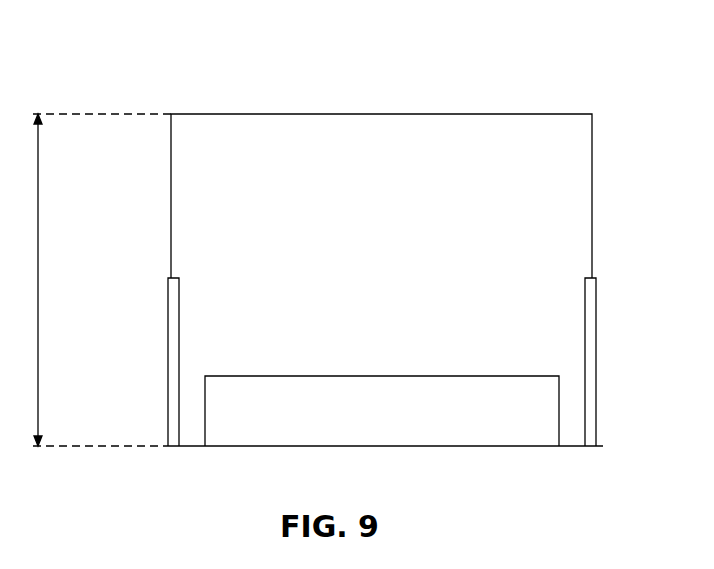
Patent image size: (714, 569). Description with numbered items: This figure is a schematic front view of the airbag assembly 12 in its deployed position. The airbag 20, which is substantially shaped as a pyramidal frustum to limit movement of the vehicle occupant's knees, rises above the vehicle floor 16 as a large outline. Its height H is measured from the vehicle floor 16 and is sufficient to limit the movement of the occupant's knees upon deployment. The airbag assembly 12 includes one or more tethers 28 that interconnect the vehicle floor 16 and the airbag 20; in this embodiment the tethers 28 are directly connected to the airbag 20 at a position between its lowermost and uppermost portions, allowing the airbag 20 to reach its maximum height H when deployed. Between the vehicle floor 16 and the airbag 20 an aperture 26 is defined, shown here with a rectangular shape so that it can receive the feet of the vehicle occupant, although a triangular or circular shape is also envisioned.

The airbag assembly 12 is at (151, 61).
The vehicle floor 16 is at (233, 446).
The airbag 20 is at (552, 113).
The aperture 26 is at (380, 376).
The tethers 28 is at (168, 362).
The height H is at (38, 280).